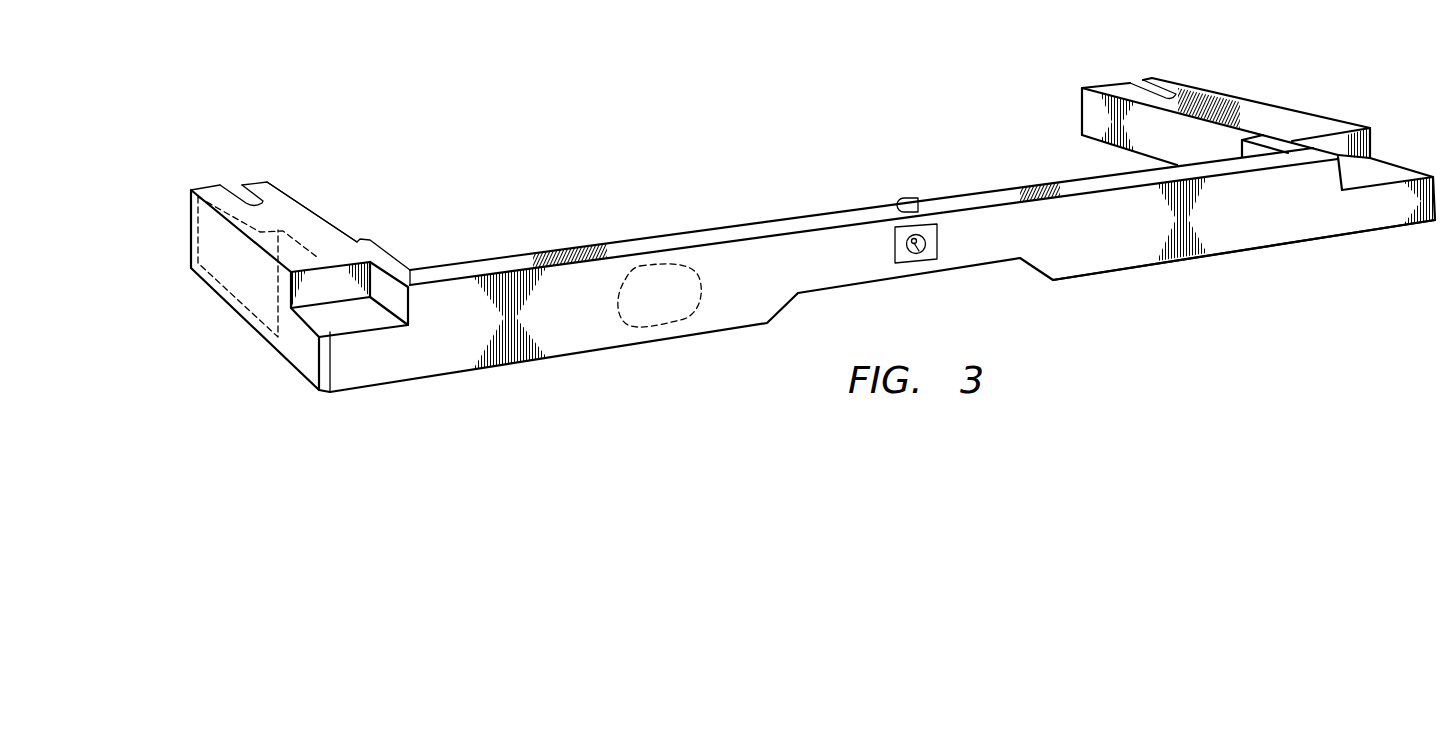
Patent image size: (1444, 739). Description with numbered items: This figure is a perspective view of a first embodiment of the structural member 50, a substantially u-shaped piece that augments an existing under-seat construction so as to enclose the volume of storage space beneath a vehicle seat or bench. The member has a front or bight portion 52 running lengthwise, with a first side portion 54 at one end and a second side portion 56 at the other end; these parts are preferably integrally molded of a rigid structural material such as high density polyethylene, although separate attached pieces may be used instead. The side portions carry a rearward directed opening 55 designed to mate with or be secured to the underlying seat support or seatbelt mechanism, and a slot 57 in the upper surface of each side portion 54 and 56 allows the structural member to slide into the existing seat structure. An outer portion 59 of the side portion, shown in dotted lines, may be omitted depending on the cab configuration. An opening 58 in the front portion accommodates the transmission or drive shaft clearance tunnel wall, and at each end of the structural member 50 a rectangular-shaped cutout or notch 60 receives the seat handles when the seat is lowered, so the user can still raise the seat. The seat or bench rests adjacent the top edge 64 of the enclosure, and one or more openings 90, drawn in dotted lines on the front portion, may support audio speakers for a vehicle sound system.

The structural member 50 is at (617, 378).
The front or bight portion 52 is at (1252, 237).
The first side portion 54 is at (322, 232).
The rearward directed opening 55 is at (180, 191).
The second side portion 56 is at (1282, 112).
The slot 57 is at (236, 172).
The opening 58 is at (908, 290).
The outer portion 59 is at (233, 283).
The rectangular-shaped cutout or notch 60 is at (347, 320).
The top edge 64 is at (735, 233).
The opening 90 is at (693, 305).